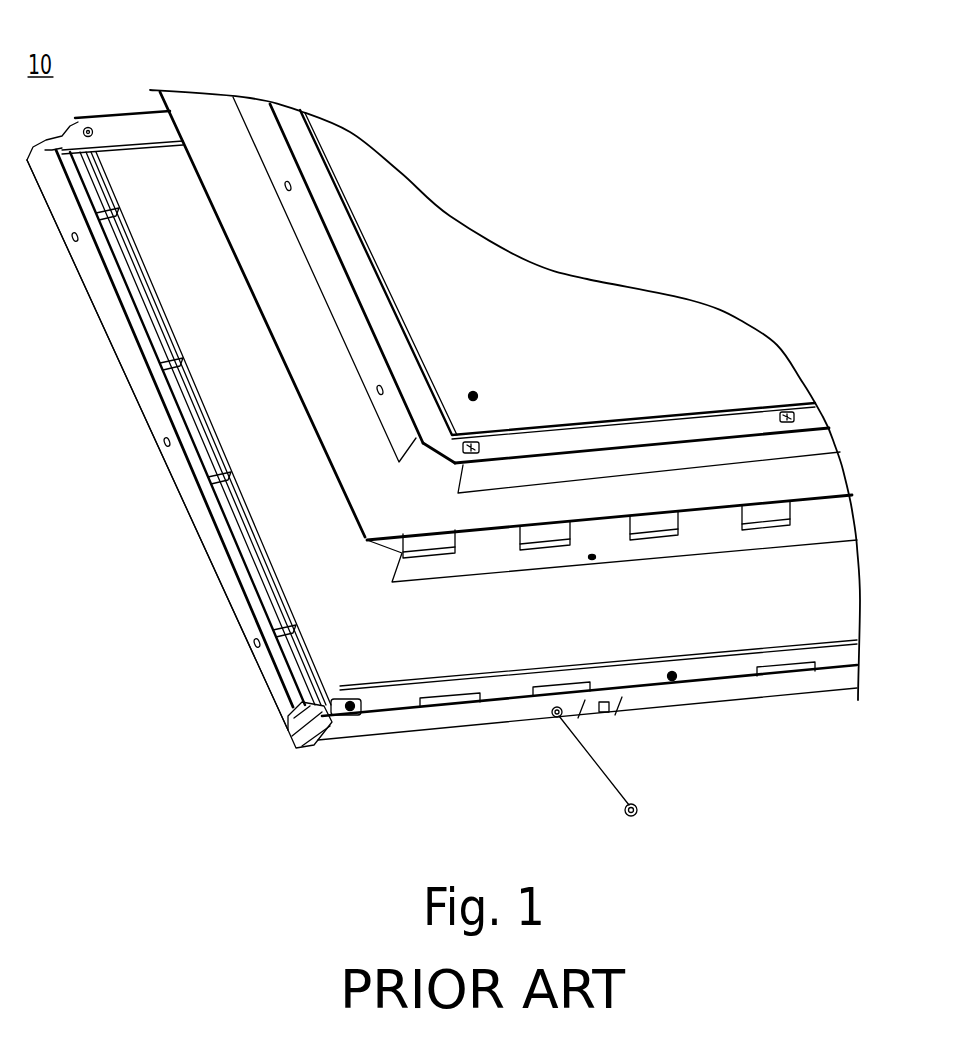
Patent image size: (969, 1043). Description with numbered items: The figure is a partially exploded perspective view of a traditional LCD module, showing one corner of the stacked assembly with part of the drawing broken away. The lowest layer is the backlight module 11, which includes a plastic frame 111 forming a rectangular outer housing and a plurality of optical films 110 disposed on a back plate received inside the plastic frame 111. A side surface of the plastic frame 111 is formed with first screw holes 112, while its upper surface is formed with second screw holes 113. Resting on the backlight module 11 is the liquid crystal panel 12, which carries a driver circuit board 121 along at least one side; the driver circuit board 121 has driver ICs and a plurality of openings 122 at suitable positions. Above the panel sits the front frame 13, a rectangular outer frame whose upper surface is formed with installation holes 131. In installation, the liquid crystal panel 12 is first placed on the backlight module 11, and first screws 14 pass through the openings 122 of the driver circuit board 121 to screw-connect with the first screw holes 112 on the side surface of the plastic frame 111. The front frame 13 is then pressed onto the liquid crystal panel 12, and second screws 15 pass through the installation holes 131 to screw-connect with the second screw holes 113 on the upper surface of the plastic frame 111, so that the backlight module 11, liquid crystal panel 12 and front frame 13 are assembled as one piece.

The backlight module 11 is at (212, 578).
The optical films 110 is at (310, 582).
The plastic frame 111 is at (313, 738).
The first screw holes 112 is at (560, 712).
The second screw holes 113 is at (353, 707).
The liquid crystal panel 12 is at (318, 478).
The driver circuit board 121 is at (540, 563).
The openings 122 is at (592, 560).
The front frame 13 is at (832, 414).
The installation holes 131 is at (483, 437).
The first screws 14 is at (639, 808).
The second screws 15 is at (476, 392).